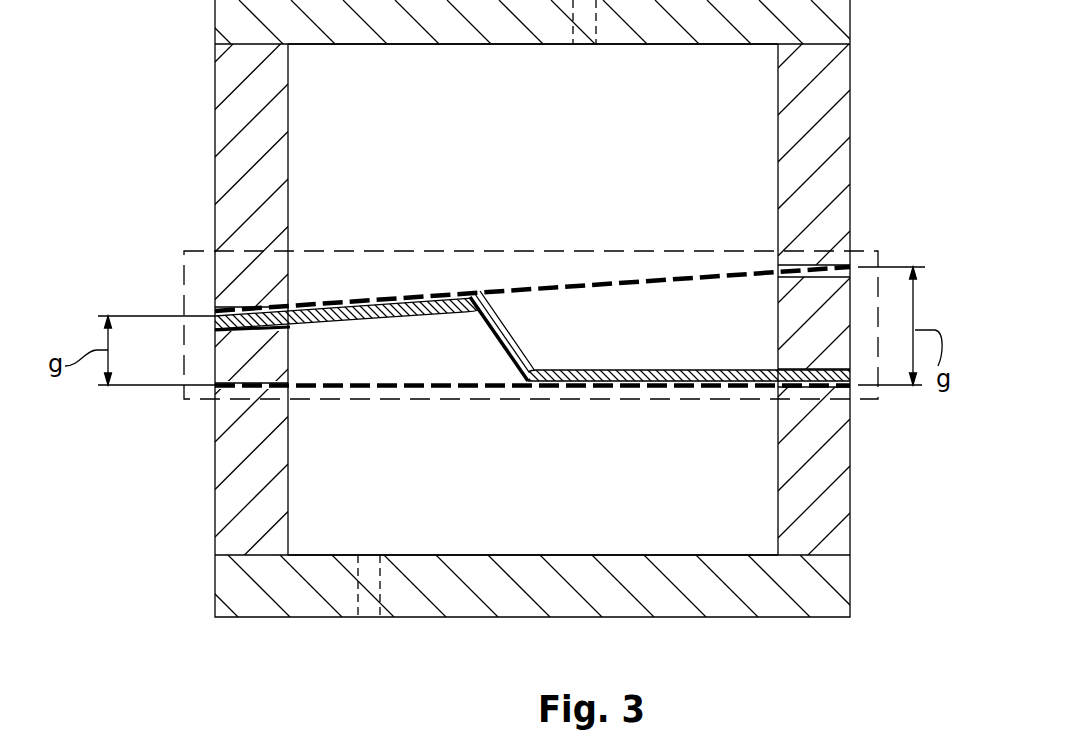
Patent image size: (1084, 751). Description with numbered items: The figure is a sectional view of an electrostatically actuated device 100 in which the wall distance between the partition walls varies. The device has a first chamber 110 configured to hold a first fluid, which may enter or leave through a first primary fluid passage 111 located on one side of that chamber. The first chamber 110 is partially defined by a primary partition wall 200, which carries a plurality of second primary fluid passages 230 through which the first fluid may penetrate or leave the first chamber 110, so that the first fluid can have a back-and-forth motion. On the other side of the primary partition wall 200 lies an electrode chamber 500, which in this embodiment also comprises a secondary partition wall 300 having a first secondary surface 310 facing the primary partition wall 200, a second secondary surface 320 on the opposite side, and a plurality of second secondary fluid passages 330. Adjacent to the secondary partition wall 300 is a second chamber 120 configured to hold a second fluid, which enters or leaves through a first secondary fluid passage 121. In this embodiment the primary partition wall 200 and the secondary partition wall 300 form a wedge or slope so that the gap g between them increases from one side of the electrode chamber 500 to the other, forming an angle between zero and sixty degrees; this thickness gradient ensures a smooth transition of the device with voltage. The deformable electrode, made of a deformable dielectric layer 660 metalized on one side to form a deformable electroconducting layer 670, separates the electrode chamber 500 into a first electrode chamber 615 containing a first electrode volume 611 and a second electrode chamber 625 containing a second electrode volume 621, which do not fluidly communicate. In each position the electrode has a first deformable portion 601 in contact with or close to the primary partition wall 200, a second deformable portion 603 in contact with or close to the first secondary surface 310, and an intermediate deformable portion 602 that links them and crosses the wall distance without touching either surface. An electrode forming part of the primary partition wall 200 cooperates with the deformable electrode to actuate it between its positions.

The electrostatically actuated device 100 is at (924, 43).
The first chamber 110 is at (386, 128).
The first primary fluid passage 111 is at (580, 45).
The second chamber 120 is at (742, 515).
The first secondary fluid passage 121 is at (372, 555).
The primary partition wall 200 is at (697, 276).
The plurality of second primary fluid passages 230 is at (668, 279).
The secondary partition wall 300 is at (316, 390).
The first secondary surface 310 is at (478, 383).
The second secondary surface 320 is at (403, 390).
The plurality of second secondary fluid passages 330 is at (688, 387).
The electrode chamber 500 is at (863, 402).
The first deformable portion 601 is at (351, 300).
The intermediate deformable portion 602 is at (506, 331).
The second deformable portion 603 is at (600, 388).
The first electrode volume 611 is at (778, 338).
The first electrode chamber 615 is at (600, 356).
The second electrode volume 621 is at (287, 362).
The second electrode chamber 625 is at (422, 359).
The deformable dielectric layer 660 is at (637, 370).
The deformable electroconducting layer 670 is at (333, 327).